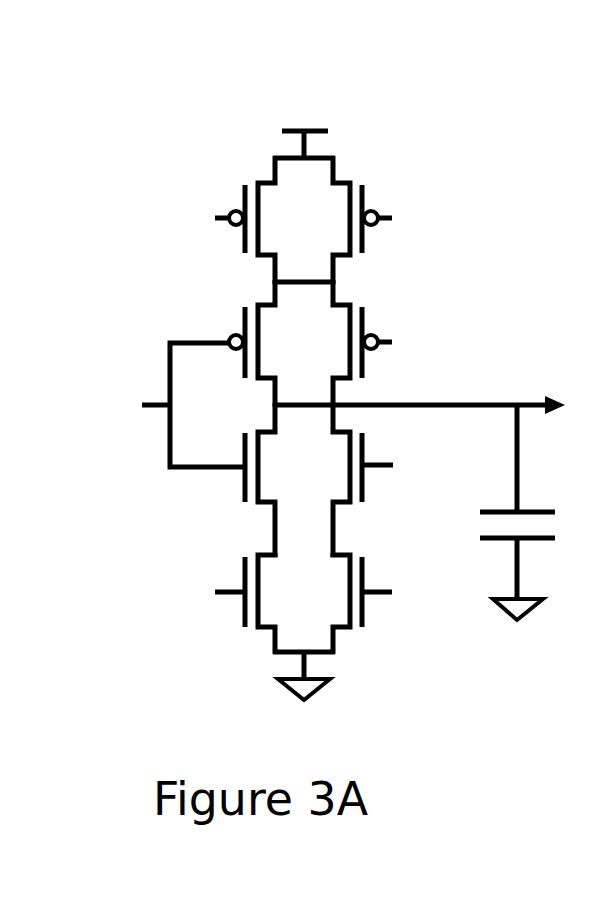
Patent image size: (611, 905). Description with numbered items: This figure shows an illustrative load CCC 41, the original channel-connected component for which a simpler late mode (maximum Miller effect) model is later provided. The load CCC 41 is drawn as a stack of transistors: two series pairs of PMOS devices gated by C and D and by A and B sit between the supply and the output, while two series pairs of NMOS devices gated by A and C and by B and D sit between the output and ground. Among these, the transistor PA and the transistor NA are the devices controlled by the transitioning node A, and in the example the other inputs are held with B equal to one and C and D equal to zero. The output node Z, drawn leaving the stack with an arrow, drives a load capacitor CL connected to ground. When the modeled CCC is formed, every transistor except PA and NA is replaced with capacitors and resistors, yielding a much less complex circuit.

The load CCC 41 is at (492, 153).
The transistor PA is at (264, 343).
The transistor NA is at (273, 480).
The output node Z is at (419, 389).
The load capacitor CL is at (531, 512).